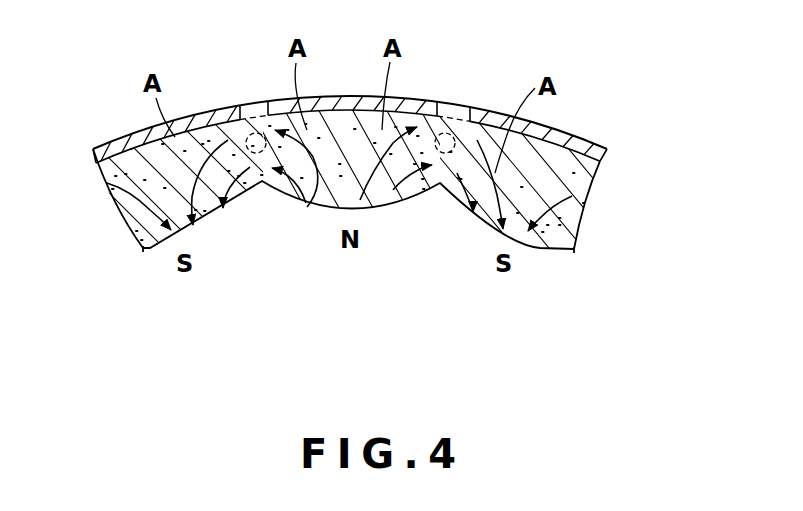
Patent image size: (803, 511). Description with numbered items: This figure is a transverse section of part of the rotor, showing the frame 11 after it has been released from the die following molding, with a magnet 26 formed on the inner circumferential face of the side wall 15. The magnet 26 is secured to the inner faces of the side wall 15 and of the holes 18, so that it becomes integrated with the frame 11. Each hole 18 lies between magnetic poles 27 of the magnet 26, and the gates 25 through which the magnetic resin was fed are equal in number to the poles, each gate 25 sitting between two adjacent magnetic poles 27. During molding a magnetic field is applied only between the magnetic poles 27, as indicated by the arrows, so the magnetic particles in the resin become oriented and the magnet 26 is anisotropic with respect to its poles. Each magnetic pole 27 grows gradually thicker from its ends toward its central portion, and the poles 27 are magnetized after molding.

The frame 11 is at (570, 118).
The side wall 15 is at (346, 96).
The hole 18 is at (237, 106).
The gate 25 is at (256, 133).
The magnet 26 is at (561, 257).
The magnetic pole 27 is at (200, 237).